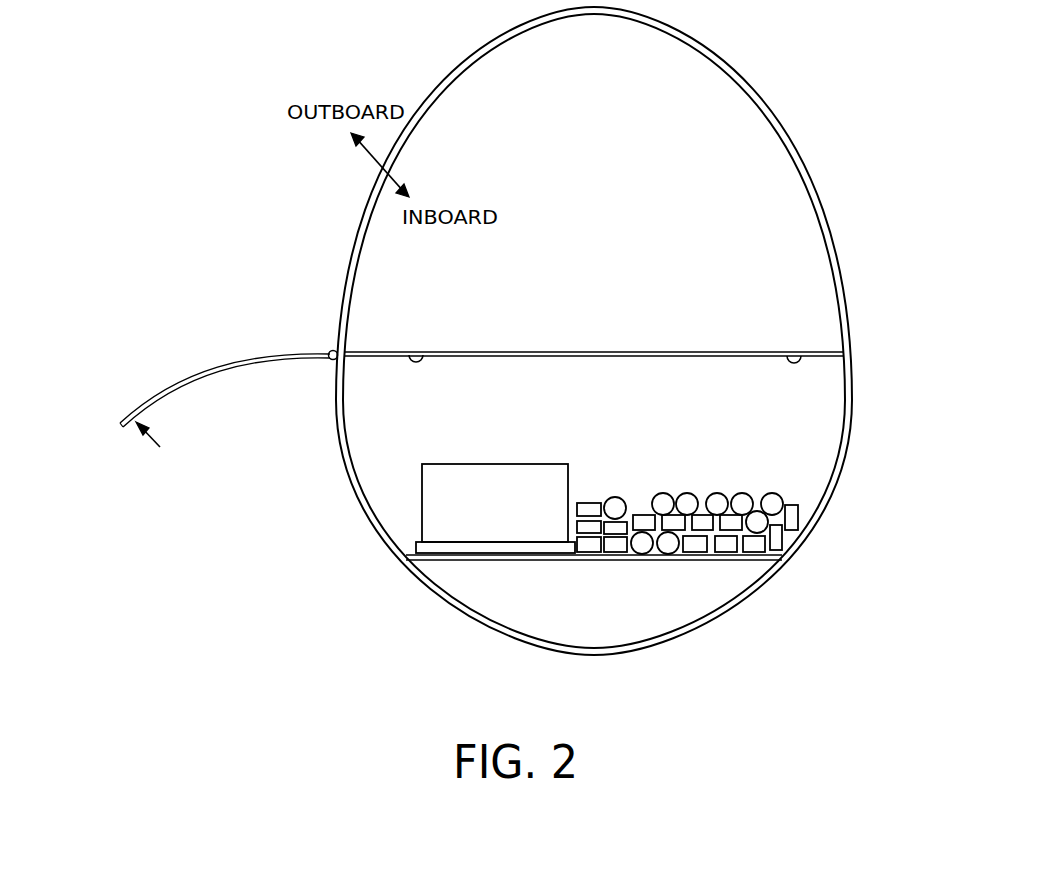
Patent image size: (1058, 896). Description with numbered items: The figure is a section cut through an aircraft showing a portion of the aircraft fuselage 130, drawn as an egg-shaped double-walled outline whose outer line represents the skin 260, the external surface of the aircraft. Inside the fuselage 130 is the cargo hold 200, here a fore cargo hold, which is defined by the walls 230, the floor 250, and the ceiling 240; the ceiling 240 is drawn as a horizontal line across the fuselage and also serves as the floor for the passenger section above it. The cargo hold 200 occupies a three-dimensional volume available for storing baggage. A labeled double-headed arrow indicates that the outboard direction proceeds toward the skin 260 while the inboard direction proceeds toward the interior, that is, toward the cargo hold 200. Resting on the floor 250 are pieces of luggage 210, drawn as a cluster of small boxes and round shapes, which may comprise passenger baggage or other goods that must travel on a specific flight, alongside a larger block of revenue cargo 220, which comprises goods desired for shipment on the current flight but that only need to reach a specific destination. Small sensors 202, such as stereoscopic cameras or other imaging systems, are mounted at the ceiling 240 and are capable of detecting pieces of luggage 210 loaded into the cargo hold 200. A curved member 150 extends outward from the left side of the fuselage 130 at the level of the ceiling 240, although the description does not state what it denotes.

The aircraft fuselage 130 is at (800, 168).
The support arm 150 is at (120, 423).
The cargo hold 200 is at (818, 403).
The sensors 202 is at (422, 362).
The pieces of luggage 210 is at (589, 501).
The revenue cargo 220 is at (560, 462).
The walls 230 is at (347, 415).
The ceiling 240 is at (614, 352).
The floor 250 is at (562, 562).
The skin 260 is at (768, 105).